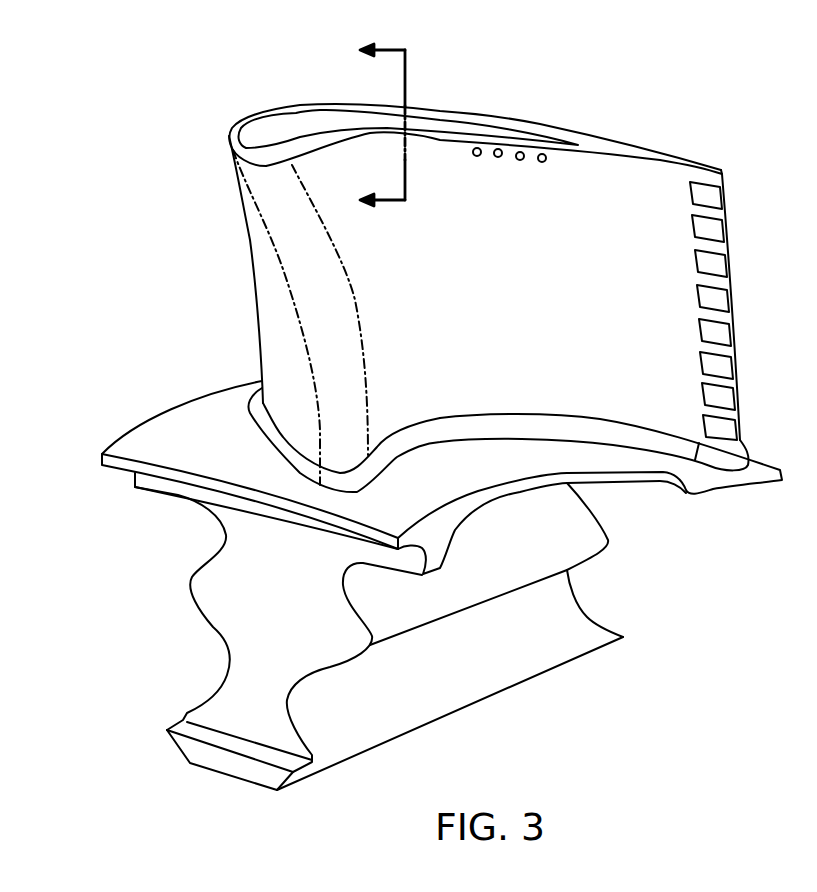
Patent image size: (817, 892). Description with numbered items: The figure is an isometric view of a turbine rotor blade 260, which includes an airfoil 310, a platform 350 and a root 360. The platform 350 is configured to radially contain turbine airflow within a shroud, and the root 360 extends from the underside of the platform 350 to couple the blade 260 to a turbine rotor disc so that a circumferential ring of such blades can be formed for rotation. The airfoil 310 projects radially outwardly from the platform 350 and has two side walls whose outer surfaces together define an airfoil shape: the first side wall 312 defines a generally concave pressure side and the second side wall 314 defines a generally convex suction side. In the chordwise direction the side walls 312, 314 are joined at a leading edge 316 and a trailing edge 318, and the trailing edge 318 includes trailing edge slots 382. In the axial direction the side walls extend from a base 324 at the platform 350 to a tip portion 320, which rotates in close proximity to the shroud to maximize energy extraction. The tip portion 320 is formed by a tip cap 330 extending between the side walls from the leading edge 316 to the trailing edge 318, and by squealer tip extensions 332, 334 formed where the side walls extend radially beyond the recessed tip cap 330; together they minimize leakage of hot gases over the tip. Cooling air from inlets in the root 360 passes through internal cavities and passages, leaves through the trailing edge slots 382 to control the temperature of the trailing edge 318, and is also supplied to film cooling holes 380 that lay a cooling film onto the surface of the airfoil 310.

The rotor blade 260 is at (695, 110).
The airfoil 310 is at (439, 143).
The first side wall 312 is at (540, 321).
The second side wall 314 is at (258, 311).
The leading edge 316 is at (270, 212).
The trailing edge 318 is at (741, 232).
The tip portion 320 is at (218, 130).
The base 324 is at (262, 420).
The tip cap 330 is at (283, 122).
The squealer tip extension 332 is at (461, 150).
The squealer tip extension 334 is at (491, 122).
The platform 350 is at (458, 492).
The root 360 is at (245, 628).
The film cooling holes 380 is at (520, 162).
The trailing edge slots 382 is at (732, 332).